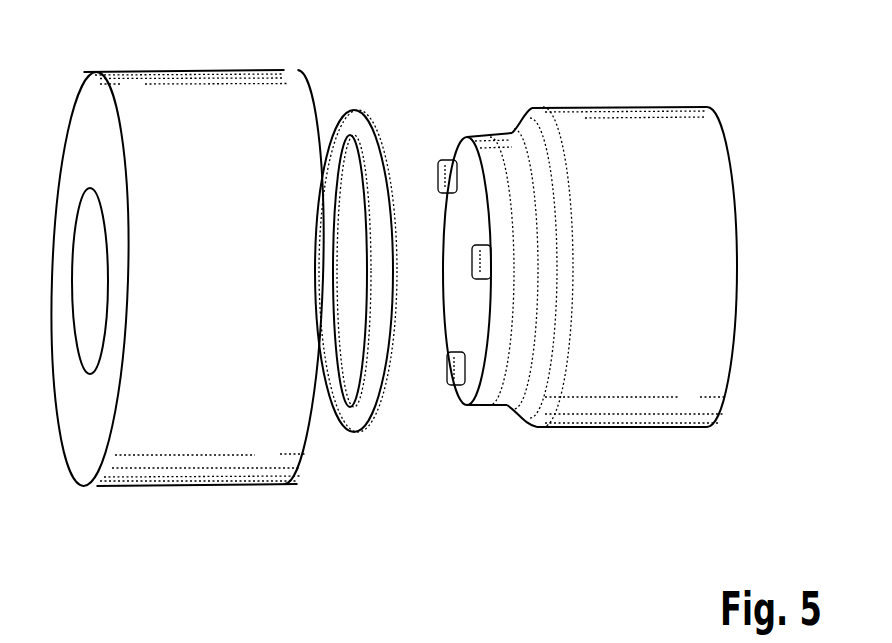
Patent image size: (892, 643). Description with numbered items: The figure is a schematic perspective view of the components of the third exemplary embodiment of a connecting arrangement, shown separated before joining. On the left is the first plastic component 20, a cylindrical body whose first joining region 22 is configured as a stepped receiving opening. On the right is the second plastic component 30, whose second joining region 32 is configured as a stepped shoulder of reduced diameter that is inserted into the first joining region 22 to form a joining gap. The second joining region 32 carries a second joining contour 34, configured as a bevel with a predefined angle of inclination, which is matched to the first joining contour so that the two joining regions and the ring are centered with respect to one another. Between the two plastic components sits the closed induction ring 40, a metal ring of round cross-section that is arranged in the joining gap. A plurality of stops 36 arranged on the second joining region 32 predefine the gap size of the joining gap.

The first plastic component 20 is at (185, 83).
The first joining region 22 is at (308, 85).
The second plastic component 30 is at (613, 118).
The second joining region 32 is at (507, 458).
The second joining contour 34 is at (505, 128).
The stops 36 is at (447, 367).
The closed induction ring 40 is at (358, 421).